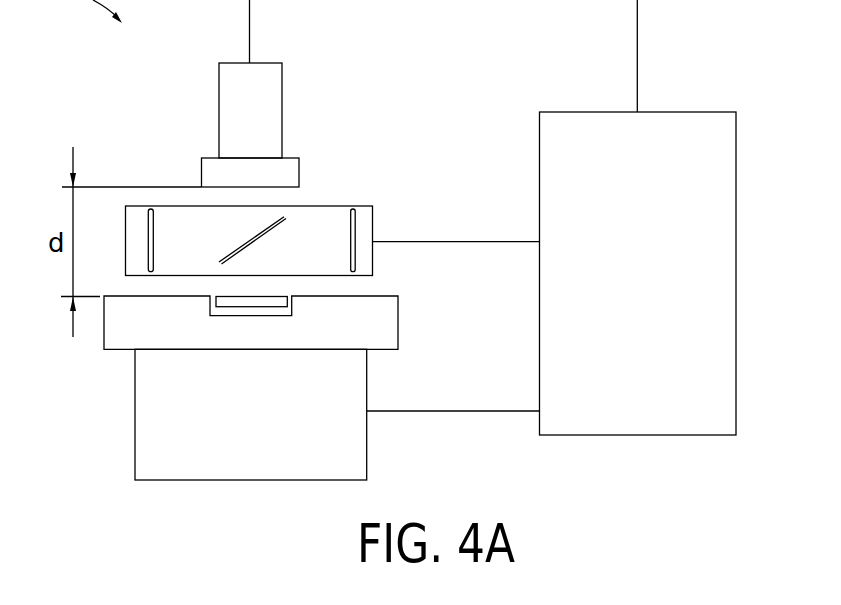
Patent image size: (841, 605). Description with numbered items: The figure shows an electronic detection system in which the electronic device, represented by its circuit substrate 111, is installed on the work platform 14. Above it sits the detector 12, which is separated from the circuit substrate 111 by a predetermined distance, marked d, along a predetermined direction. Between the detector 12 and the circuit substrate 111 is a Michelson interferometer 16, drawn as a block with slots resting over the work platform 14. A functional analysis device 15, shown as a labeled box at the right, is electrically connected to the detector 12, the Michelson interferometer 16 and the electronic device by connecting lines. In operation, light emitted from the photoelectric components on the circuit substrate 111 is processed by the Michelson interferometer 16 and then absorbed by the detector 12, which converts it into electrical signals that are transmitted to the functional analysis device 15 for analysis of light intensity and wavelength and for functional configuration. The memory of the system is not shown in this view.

The detector 12 is at (204, 156).
The Michelson interferometer 16 is at (371, 200).
The work platform 14 is at (401, 318).
The circuit substrate 111 is at (298, 306).
The functional analysis device 15 is at (694, 105).